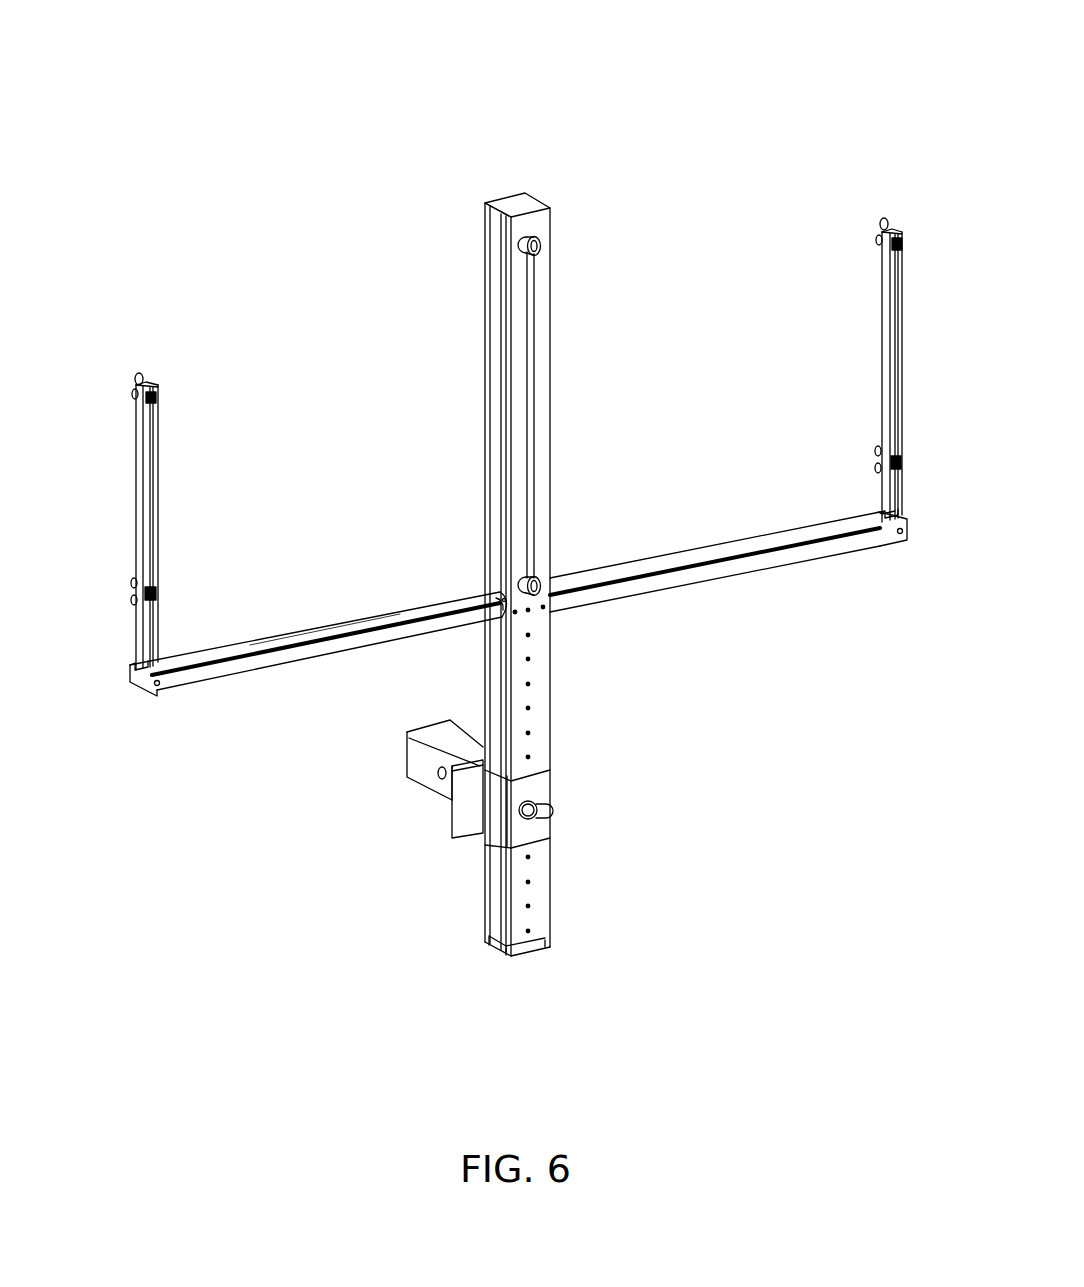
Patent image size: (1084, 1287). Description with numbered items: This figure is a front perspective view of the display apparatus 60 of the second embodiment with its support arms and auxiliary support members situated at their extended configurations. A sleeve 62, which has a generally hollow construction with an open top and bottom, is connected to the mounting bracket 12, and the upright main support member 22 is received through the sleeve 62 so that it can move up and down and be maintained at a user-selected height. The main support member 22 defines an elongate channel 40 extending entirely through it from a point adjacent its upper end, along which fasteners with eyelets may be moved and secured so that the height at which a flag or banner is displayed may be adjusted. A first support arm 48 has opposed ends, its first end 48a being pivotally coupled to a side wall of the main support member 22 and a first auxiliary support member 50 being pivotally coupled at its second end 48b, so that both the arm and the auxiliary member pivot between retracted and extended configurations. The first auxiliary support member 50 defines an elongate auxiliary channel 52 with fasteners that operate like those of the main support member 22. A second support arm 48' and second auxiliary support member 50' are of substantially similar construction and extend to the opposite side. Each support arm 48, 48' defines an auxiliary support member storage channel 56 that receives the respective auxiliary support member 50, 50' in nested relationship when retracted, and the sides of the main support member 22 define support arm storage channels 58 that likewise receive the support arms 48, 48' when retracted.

The mounting bracket 12 is at (405, 833).
The main support member 22 is at (615, 388).
The elongate channel 40 is at (537, 345).
The first support arm 48 is at (318, 679).
The second support arm 48' is at (728, 573).
The first end 48a is at (500, 610).
The second end 48b is at (158, 687).
The first auxiliary support member 50 is at (156, 521).
The second auxiliary support member 50' is at (851, 370).
The elongate auxiliary channel 52 is at (150, 465).
The auxiliary support member storage channel 56 is at (316, 633).
The support arm storage channel 58 is at (490, 358).
The display apparatus 60 is at (600, 80).
The sleeve 62 is at (548, 783).